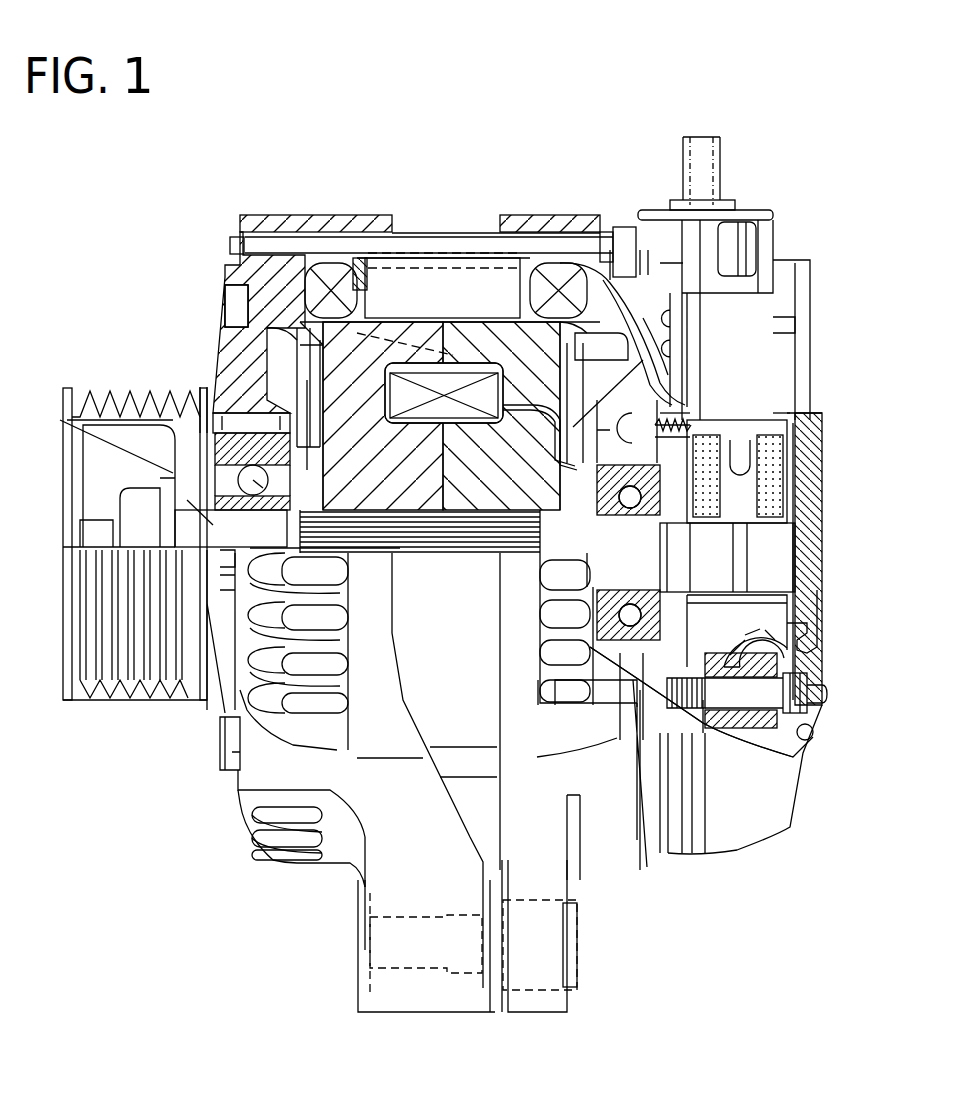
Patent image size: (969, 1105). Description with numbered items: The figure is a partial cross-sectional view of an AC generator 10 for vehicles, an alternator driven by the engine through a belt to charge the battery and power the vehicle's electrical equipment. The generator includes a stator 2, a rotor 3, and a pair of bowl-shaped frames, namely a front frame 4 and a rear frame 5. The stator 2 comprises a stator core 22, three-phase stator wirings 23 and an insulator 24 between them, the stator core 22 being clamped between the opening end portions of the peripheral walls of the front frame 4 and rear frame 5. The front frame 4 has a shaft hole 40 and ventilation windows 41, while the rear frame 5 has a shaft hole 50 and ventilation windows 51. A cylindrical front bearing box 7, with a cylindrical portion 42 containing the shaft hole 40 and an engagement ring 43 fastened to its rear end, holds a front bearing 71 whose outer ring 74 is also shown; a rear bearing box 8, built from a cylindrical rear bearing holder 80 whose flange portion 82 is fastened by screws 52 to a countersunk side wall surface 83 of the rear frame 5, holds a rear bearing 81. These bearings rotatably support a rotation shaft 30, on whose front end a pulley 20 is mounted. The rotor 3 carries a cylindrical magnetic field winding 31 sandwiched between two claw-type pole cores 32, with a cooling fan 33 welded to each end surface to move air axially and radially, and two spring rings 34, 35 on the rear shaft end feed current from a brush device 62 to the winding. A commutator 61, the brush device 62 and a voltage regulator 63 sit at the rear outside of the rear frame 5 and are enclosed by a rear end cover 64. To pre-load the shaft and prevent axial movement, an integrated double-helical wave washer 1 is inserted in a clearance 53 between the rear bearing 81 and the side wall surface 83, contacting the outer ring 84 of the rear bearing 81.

The double-helical wave washer 1 is at (760, 735).
The stator 2 is at (455, 224).
The rotor 3 is at (300, 385).
The front frame 4 is at (257, 730).
The rear frame 5 is at (640, 315).
The front bearing box 7 is at (273, 397).
The rear bearing box 8 is at (593, 647).
The AC generator 10 is at (240, 210).
The pulley 20 is at (97, 400).
The stator core 22 is at (475, 265).
The stator wirings 23 is at (552, 283).
The insulator 24 is at (368, 290).
The rotation shaft 30 is at (183, 502).
The magnetic field winding 31 is at (470, 380).
The pole cores 32 is at (407, 333).
The cooling fan 33 is at (300, 333).
The spring ring 34 is at (723, 558).
The spring ring 35 is at (777, 582).
The shaft hole 40 is at (287, 407).
The ventilation windows 41 is at (297, 662).
The cylindrical portion 42 is at (275, 398).
The engagement ring 43 is at (293, 377).
The shaft hole 50 is at (703, 510).
The ventilation windows 51 is at (583, 690).
The screws 52 is at (670, 414).
The clearance 53 is at (785, 406).
The commutator 61 is at (790, 655).
The brush device 62 is at (800, 412).
The voltage regulator 63 is at (745, 290).
The rear end cover 64 is at (737, 832).
The front bearing 71 is at (213, 477).
The outer ring 74 is at (205, 470).
The rear bearing holder 80 is at (633, 413).
The rear bearing 81 is at (600, 607).
The flange portion 82 is at (660, 410).
The side wall surface 83 is at (705, 475).
The outer ring 84 is at (640, 700).